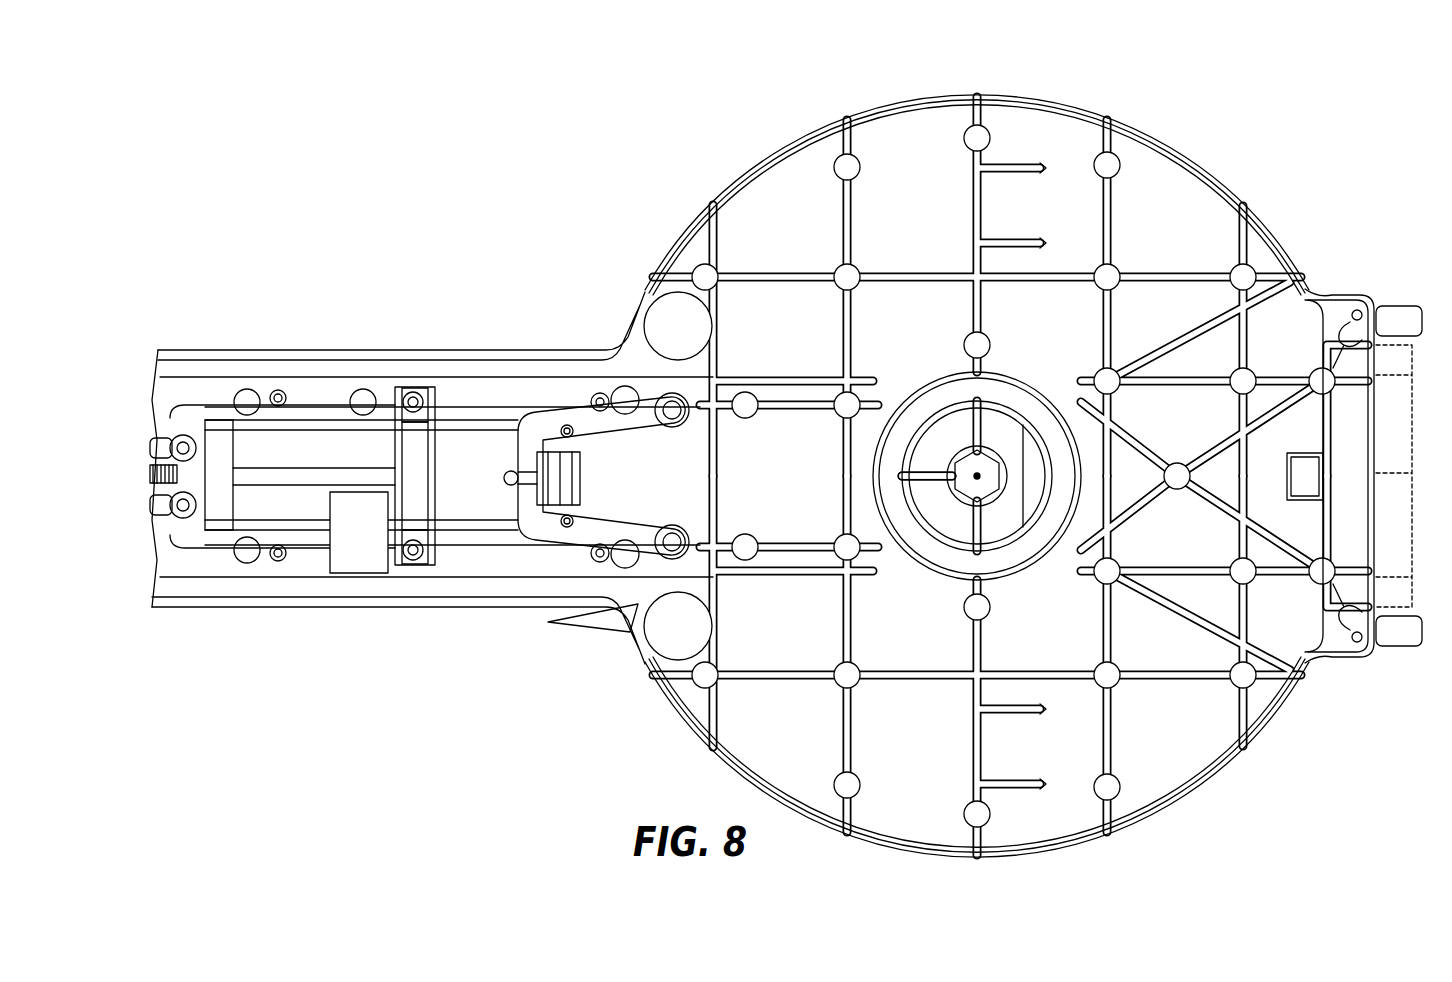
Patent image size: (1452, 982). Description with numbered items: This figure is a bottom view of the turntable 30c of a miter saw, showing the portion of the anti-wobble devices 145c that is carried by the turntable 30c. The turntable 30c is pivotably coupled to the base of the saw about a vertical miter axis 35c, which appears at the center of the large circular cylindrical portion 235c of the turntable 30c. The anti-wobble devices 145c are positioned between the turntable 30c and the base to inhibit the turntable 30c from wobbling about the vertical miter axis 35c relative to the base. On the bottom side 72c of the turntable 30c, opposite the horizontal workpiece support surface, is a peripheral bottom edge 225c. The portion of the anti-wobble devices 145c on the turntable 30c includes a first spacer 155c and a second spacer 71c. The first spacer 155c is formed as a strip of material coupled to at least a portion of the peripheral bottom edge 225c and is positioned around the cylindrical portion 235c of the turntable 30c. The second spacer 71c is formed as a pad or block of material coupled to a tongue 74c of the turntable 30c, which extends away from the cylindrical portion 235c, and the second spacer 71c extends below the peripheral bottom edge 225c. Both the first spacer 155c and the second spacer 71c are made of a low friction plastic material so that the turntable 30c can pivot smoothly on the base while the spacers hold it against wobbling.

The turntable 30c is at (962, 76).
The first spacer 155c is at (765, 163).
The vertical miter axis 35c is at (985, 490).
The cylindrical portion 235c is at (1292, 168).
The anti-wobble devices 145c is at (496, 195).
The peripheral bottom edge 225c is at (305, 345).
The tongue 74c is at (242, 620).
The second spacer 71c is at (360, 535).
The bottom side 72c is at (547, 664).